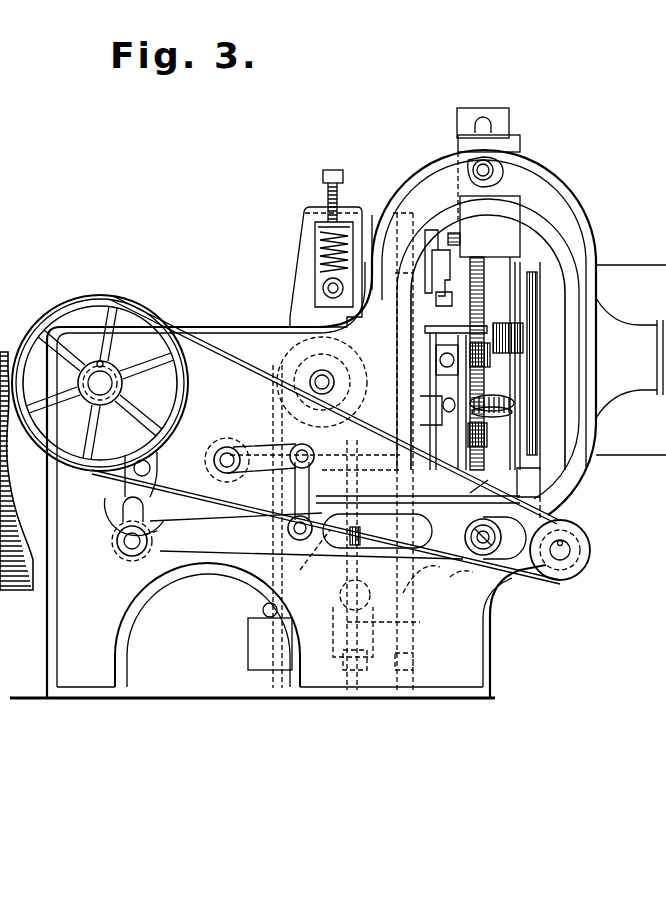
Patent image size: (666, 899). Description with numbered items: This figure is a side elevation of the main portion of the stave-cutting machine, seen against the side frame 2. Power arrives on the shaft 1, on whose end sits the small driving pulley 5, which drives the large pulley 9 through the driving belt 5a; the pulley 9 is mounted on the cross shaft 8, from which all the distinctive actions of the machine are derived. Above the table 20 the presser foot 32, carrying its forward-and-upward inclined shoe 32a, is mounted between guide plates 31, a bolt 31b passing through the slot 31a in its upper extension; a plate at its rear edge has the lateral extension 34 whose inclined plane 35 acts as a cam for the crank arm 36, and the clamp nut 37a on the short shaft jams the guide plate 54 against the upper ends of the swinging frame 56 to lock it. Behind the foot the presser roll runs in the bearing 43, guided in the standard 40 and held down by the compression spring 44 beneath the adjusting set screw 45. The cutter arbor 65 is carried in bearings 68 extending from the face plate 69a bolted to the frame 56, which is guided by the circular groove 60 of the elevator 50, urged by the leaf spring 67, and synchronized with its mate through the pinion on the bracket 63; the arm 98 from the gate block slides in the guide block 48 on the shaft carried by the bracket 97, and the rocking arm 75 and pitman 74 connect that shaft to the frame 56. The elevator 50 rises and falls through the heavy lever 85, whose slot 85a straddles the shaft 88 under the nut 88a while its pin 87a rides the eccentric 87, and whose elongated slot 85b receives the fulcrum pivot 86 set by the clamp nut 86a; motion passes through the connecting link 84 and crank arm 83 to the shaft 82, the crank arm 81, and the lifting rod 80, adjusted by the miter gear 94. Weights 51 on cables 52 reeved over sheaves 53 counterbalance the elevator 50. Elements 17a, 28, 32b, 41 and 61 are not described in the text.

The shaft 1 is at (568, 545).
The side frame 2 is at (548, 205).
The driving pulley 5 is at (568, 573).
The driving belt 5a is at (216, 342).
The cross shaft 8 is at (112, 383).
The pulley 9 is at (120, 300).
The bracket 17a is at (648, 385).
The table 20 is at (218, 327).
The disc 28 is at (327, 375).
The guide plate 31 is at (470, 143).
The slot 31a is at (491, 130).
The bolt 31b is at (497, 178).
The presser foot 32 is at (507, 292).
The shoe 32a is at (540, 320).
The plate 32b is at (428, 329).
The lateral extension 34 is at (424, 240).
The inclined plane 35 is at (450, 246).
The crank arm 36 is at (490, 226).
The clamp nut 37a is at (382, 210).
The standard 40 is at (303, 265).
The pin 41 is at (323, 294).
The bearing 43 is at (328, 288).
The compression spring 44 is at (316, 243).
The adjusting set screw 45 is at (322, 180).
The guide block 48 is at (522, 482).
The elevator 50 is at (410, 478).
The weight 51 is at (260, 640).
The cable 52 is at (272, 564).
The sheave 53 is at (295, 357).
The guide plate 54 is at (420, 266).
The swinging frame 56 is at (422, 292).
The circular groove 60 is at (420, 645).
The gear 61 is at (514, 402).
The bracket 63 is at (353, 661).
The arbor 65 is at (522, 382).
The leaf spring 67 is at (422, 349).
The bearing 68 is at (489, 444).
The face plate 69a is at (435, 414).
The pitman 74 is at (435, 360).
The rocking arm 75 is at (490, 428).
The lifting rod 80 is at (368, 672).
The crank arm 81 is at (326, 448).
The shaft 82 is at (222, 460).
The crank arm 83 is at (262, 458).
The connecting link 84 is at (307, 487).
The lever 85 is at (335, 527).
The slot 85a is at (133, 510).
The elongated slot 85b is at (360, 575).
The fulcrum pivot 86 is at (552, 572).
The clamp nut 86a is at (465, 537).
The eccentric 87 is at (118, 523).
The pin 87a is at (152, 468).
The shaft 88 is at (128, 546).
The nut 88a is at (338, 606).
The miter gear 94 is at (334, 598).
The bracket 97 is at (478, 495).
The arm 98 is at (556, 578).